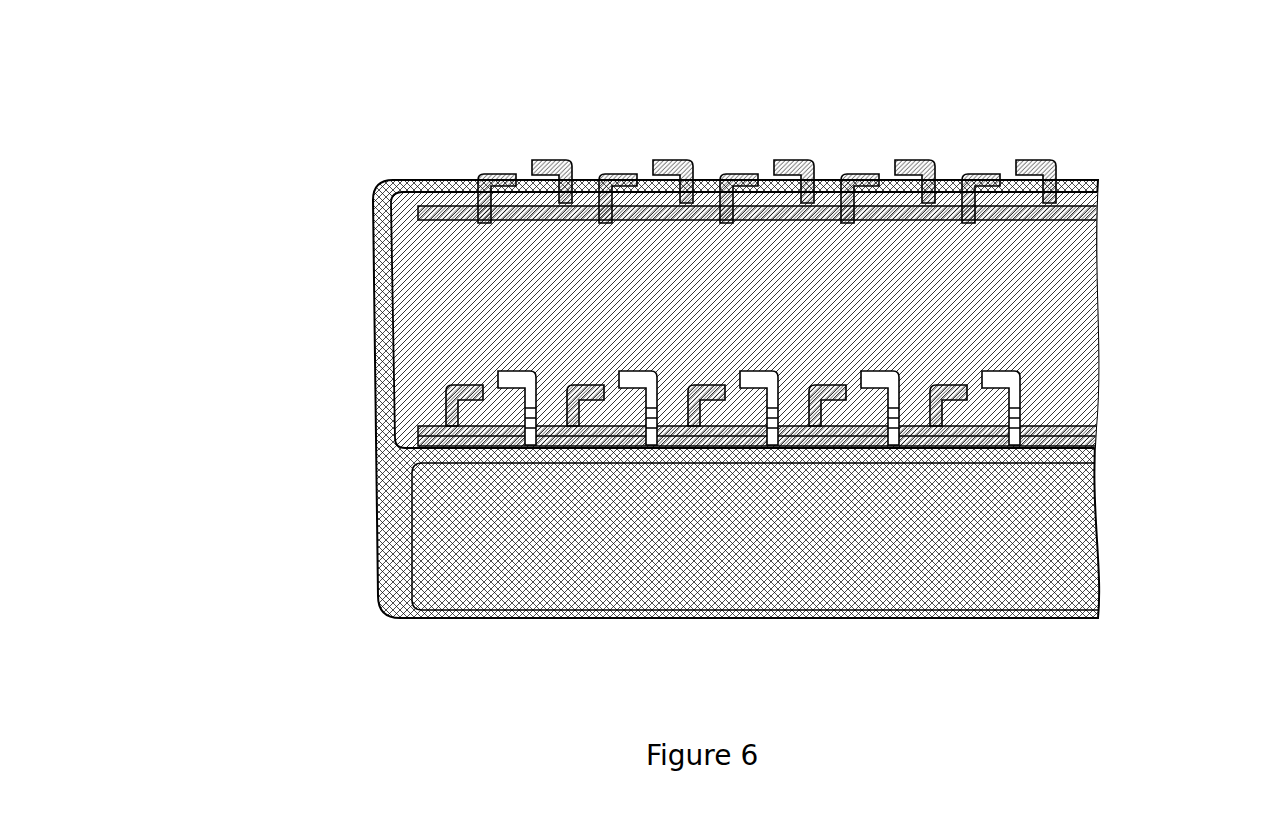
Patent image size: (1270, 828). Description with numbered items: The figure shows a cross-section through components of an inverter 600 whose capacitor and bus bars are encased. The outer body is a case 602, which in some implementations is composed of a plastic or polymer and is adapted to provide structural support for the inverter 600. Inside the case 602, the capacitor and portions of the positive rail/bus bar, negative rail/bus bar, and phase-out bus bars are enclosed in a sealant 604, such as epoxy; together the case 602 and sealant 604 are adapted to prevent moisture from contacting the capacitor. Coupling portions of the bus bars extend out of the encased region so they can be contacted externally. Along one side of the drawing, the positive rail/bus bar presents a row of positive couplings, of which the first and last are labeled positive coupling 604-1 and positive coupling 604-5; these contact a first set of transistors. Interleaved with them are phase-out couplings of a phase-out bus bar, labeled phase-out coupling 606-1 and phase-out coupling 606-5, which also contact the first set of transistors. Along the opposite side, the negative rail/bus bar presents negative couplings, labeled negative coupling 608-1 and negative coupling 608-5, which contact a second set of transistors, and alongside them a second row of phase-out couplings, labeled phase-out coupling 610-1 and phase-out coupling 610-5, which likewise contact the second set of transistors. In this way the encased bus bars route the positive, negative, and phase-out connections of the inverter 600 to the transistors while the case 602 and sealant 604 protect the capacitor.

The inverter 600 is at (272, 64).
The case 602 is at (392, 572).
The sealant 604 is at (1063, 305).
The positive coupling 604-1 is at (508, 378).
The positive coupling 604-5 is at (992, 376).
The phase-out coupling 606-1 is at (446, 382).
The phase-out coupling 606-5 is at (934, 390).
The negative coupling 608-1 is at (548, 152).
The negative coupling 608-5 is at (1032, 153).
The phase-out coupling 610-1 is at (476, 167).
The phase-out coupling 610-5 is at (965, 166).